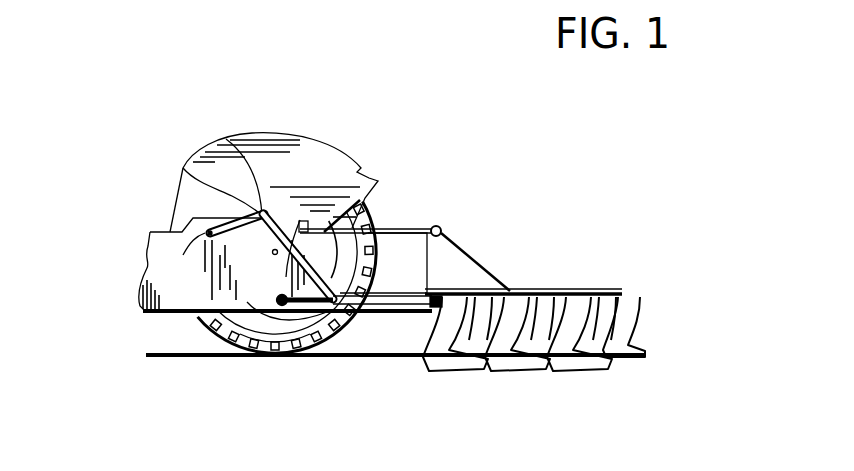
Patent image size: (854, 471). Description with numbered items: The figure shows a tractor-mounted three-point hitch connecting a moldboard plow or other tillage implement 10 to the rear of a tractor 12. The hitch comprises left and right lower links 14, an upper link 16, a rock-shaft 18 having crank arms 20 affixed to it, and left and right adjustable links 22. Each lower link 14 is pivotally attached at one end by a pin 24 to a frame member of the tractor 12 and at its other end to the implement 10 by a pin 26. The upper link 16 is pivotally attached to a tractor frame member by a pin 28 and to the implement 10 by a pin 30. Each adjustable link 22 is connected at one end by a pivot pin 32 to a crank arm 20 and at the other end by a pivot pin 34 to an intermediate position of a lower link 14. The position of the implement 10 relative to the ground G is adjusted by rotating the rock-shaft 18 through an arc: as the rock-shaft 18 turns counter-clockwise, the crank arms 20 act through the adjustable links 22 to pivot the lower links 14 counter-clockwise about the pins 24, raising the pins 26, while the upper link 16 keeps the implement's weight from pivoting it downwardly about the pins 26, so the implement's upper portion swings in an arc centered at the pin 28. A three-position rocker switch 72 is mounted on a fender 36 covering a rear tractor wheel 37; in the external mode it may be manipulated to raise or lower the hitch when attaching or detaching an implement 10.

The tillage implement 10 is at (517, 242).
The tractor 12 is at (143, 284).
The lower links 14 is at (378, 313).
The upper link 16 is at (398, 238).
The rock-shaft 18 is at (231, 266).
The crank arms 20 is at (183, 168).
The adjustable links 22 is at (282, 272).
The pins 24 is at (246, 340).
The pins 26 is at (442, 322).
The pin 28 is at (300, 221).
The pin 30 is at (447, 228).
The pivot pin 32 is at (236, 166).
The pivot pin 34 is at (296, 352).
The fenders 36 is at (300, 131).
The rear tractor wheels 37 is at (354, 326).
The three-position rocker switch 72 is at (373, 181).
The ground G is at (152, 352).